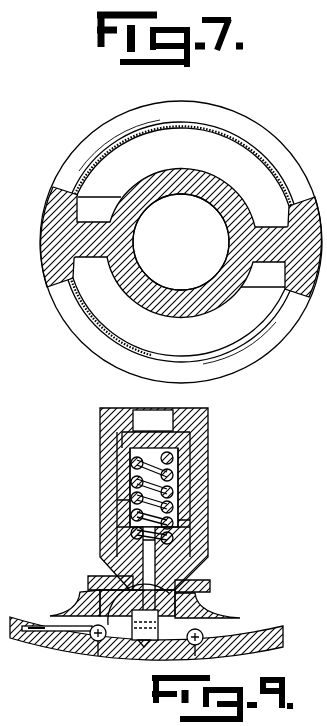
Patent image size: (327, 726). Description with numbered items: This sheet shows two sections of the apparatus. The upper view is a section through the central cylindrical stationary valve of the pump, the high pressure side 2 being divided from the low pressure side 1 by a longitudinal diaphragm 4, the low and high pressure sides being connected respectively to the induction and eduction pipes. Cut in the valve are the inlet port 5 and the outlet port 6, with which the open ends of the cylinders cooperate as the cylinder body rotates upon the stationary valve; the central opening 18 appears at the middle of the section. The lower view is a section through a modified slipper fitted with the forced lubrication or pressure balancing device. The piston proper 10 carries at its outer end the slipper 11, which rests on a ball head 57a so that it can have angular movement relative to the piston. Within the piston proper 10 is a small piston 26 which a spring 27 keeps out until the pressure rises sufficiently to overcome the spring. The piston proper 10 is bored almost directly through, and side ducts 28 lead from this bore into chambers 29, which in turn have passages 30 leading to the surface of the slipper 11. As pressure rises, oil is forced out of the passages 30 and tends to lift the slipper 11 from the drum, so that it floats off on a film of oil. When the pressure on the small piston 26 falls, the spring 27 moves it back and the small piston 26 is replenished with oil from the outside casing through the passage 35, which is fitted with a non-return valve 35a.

In FIG. 7, the low pressure side 1 is at (179, 320).
In FIG. 7, the high pressure side 2 is at (183, 164).
In FIG. 7, the longitudinal diaphragm 4 is at (118, 203).
In FIG. 7, the inlet port 5 is at (217, 372).
In FIG. 7, the outlet port 6 is at (218, 107).
In FIG. 7, the hub bore 18 is at (181, 242).
In FIG. 9, the piston 10 is at (191, 489).
In FIG. 9, the slipper 11 is at (260, 627).
In FIG. 9, the small piston 26 is at (178, 514).
In FIG. 9, the spring 27 is at (128, 514).
In FIG. 9, the side duct 28 is at (127, 657).
In FIG. 9, the chamber 29 is at (101, 656).
In FIG. 9, the passage 30 is at (90, 655).
In FIG. 9, the passage 35 is at (58, 615).
In FIG. 9, the non-return valve 35a is at (12, 631).
In FIG. 9, the ball head 57a is at (210, 588).